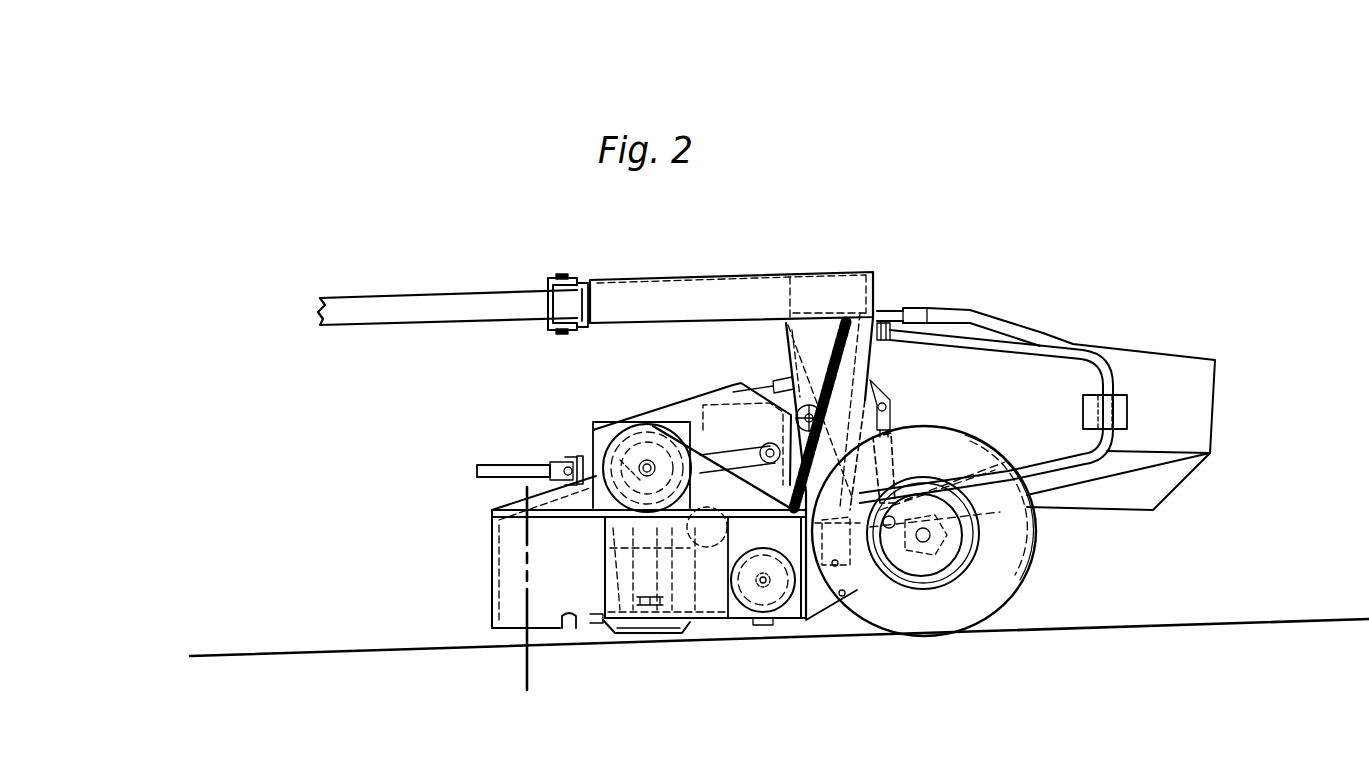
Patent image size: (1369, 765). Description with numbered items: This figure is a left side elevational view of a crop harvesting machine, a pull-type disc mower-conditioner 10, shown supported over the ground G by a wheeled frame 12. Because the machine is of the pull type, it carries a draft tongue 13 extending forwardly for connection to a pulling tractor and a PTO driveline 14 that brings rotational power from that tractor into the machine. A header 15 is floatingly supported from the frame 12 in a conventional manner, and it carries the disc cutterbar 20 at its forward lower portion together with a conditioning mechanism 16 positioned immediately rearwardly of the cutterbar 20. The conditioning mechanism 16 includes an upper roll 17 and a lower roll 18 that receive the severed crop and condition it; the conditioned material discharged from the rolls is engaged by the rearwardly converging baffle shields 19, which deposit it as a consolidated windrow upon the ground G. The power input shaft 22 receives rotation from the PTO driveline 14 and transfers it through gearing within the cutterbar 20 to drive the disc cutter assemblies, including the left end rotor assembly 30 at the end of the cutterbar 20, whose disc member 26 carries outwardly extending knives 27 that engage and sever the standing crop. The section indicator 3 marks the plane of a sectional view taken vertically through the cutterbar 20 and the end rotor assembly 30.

The disc mower-conditioner 10 is at (1000, 198).
The wheeled frame 12 is at (837, 282).
The draft tongue 13 is at (510, 300).
The PTO driveline 14 is at (502, 468).
The header 15 is at (408, 490).
The conditioning mechanism 16 is at (744, 640).
The upper roll 17 is at (750, 495).
The lower roll 18 is at (804, 621).
The baffle shields 19 is at (1193, 370).
The disc cutterbar 20 is at (624, 672).
The power input shaft 22 is at (603, 433).
The disc member 26 is at (690, 606).
The knives 27 is at (570, 632).
The left end rotor assembly 30 is at (607, 582).
The section line 3- 3 is at (548, 533).
The ground G is at (1150, 627).